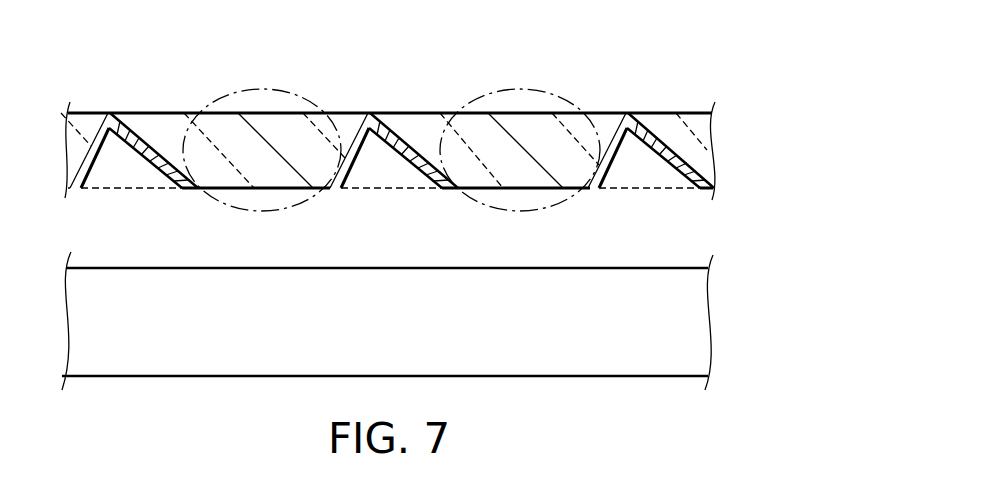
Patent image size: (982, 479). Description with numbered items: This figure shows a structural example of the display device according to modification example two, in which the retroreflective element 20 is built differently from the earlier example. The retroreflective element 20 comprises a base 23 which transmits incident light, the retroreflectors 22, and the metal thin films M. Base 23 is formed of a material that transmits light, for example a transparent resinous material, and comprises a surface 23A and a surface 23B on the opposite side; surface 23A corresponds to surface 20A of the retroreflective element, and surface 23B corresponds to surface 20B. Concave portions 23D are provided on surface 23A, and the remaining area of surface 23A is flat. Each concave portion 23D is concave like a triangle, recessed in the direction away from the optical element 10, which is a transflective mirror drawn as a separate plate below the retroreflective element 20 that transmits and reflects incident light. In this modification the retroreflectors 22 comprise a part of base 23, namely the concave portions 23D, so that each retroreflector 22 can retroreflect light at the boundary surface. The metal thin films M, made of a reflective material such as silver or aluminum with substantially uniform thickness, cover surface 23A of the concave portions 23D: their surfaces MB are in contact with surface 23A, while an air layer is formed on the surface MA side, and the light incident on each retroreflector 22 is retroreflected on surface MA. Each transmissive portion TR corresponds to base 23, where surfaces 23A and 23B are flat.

The optical element 10 is at (748, 299).
The retroreflective element 20 is at (442, 138).
The base 23 is at (415, 138).
The surface of retroreflective element 20B is at (266, 110).
The surface of base 23B is at (390, 60).
The surface of retroreflective element 20A is at (514, 196).
The surface of base 23A is at (390, 228).
The retroreflector 22 is at (142, 112).
The concave portion 23D is at (111, 155).
The transmissive portion TR is at (252, 88).
The metal thin film M is at (411, 162).
The surface of metal thin film MB is at (418, 138).
The surface of metal thin film MA is at (403, 171).